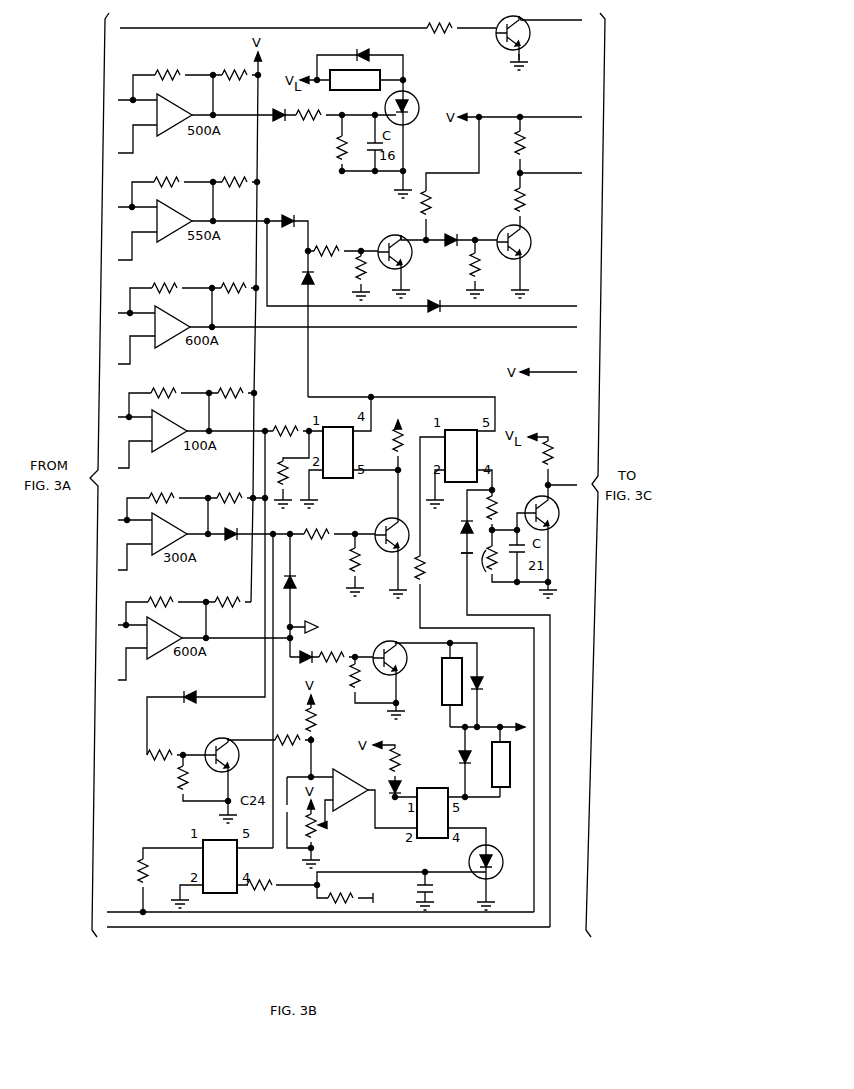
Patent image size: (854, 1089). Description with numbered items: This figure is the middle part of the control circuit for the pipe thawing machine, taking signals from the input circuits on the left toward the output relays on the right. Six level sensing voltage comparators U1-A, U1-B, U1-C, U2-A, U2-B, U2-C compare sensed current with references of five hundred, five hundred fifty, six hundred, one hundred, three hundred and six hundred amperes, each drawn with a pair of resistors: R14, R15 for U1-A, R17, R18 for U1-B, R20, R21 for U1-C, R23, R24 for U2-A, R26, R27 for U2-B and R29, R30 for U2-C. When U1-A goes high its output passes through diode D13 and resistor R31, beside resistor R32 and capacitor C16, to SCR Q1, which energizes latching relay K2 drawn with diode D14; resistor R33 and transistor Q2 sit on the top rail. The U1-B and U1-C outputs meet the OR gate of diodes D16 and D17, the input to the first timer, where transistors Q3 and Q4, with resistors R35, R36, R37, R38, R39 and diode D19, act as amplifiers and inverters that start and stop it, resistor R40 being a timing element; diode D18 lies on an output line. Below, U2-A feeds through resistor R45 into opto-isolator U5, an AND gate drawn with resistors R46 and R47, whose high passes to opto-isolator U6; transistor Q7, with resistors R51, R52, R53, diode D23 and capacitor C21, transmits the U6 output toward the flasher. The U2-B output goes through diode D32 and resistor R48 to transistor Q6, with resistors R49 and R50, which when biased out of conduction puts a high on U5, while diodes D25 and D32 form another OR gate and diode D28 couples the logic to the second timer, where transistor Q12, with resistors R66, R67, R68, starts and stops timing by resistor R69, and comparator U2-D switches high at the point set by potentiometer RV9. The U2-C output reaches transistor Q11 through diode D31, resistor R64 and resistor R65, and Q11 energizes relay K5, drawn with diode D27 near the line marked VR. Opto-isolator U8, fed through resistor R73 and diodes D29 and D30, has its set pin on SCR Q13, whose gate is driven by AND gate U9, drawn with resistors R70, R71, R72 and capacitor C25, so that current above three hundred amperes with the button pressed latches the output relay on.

The level sensing voltage comparator U1-A is at (176, 109).
The level sensing voltage comparator U1-B is at (176, 215).
The level sensing voltage comparator U1-C is at (175, 322).
The level sensing voltage comparator U2-A is at (172, 425).
The level sensing voltage comparator U2-B is at (171, 528).
The level sensing voltage comparator U2-C is at (168, 631).
The voltage comparator U2-D is at (345, 783).
The resistor R14 is at (169, 69).
The resistor R15 is at (235, 69).
The resistor R17 is at (169, 176).
The resistor R18 is at (235, 176).
The resistor R20 is at (166, 282).
The resistor R21 is at (233, 282).
The resistor R23 is at (164, 387).
The resistor R24 is at (229, 387).
The resistor R26 is at (163, 492).
The resistor R27 is at (229, 492).
The resistor R29 is at (161, 595).
The resistor R30 is at (226, 595).
The diode D13 is at (278, 124).
The resistor R31 is at (311, 108).
The resistor R32 is at (324, 148).
The capacitor C16 is at (375, 146).
The SCR Q1 is at (411, 105).
The latching relay K2 is at (355, 80).
The diode D14 is at (365, 48).
The resistor R33 is at (441, 20).
The transistor Q2 is at (525, 33).
The resistor R40 is at (534, 142).
The resistor R39 is at (534, 199).
The resistor R37 is at (440, 202).
The transistor Q3 is at (398, 232).
The diode D19 is at (453, 231).
The transistor Q4 is at (524, 242).
The resistor R38 is at (459, 264).
The resistor R35 is at (329, 243).
The resistor R36 is at (346, 269).
The diode D16 is at (289, 213).
The diode D17 is at (295, 280).
The diode D18 is at (431, 299).
The resistor R45 is at (284, 424).
The opto-isolator U5 is at (338, 452).
The resistor R47 is at (384, 442).
The opto-isolator U6 is at (461, 456).
The resistor R53 is at (561, 452).
The transistor Q7 is at (554, 513).
The resistor R51 is at (505, 501).
The zener diode D23 is at (451, 527).
The capacitor C21 is at (517, 548).
The potentiometer R52 is at (484, 575).
The diode D32 is at (226, 546).
The resistor R48 is at (319, 526).
The transistor Q6 is at (385, 526).
The resistor R49 is at (338, 563).
The resistor R50 is at (434, 567).
The diode D25 is at (305, 587).
The diode D28 is at (193, 688).
The resistor R64 is at (333, 649).
The transistor Q11 is at (404, 658).
The resistor R65 is at (344, 681).
The diode D27 is at (493, 683).
The relay K5 is at (452, 681).
The reference voltage output VR is at (514, 713).
The resistor R66 is at (160, 747).
The transistor Q12 is at (237, 755).
The resistor R67 is at (165, 777).
The resistor R68 is at (287, 741).
The resistor R69 is at (325, 719).
The resistor R73 is at (409, 759).
The diode D29 is at (408, 783).
The opto-isolator U8 is at (432, 813).
The diode D30 is at (471, 770).
The SCR Q13 is at (496, 862).
The potentiometer RV9 is at (325, 831).
The opto-isolator U9 is at (220, 866).
The resistor R70 is at (126, 870).
The resistor R71 is at (261, 894).
The resistor R72 is at (344, 891).
The capacitor C25 is at (438, 890).
The resistor (unlabeled) at U5 R46 is at (283, 472).
The diode (unlabeled) at R64 D31 is at (306, 657).